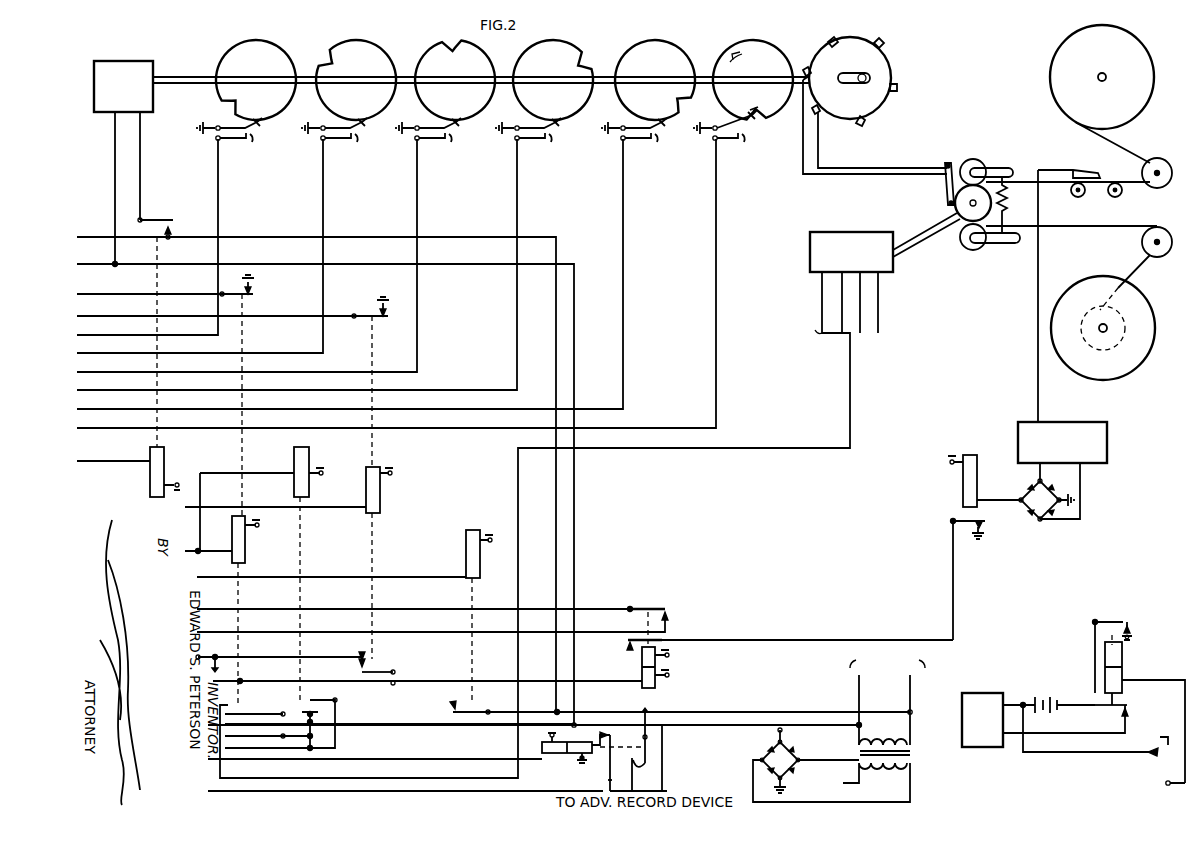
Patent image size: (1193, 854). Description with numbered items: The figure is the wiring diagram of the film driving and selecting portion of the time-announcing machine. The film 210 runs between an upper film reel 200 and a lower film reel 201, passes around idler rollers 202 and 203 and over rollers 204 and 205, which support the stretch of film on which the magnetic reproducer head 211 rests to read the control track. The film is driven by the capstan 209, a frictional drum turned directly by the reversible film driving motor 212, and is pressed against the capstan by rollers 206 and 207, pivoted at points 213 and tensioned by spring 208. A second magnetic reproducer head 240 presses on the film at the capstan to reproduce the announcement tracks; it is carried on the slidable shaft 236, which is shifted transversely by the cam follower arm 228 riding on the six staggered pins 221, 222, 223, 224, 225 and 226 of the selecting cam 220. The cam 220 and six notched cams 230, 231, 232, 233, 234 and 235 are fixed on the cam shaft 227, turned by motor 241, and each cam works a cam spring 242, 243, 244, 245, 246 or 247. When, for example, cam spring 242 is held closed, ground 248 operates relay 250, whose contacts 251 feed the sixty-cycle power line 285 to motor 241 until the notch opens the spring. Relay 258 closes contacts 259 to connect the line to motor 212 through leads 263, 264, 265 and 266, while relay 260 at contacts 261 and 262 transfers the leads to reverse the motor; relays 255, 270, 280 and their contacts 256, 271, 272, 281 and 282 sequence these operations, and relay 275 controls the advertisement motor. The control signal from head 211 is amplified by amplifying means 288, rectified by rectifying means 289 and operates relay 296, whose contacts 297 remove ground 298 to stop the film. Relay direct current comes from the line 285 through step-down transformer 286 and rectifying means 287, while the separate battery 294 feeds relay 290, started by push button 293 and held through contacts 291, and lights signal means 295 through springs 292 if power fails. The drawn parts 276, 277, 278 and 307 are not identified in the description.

The film reel 200 is at (1063, 64).
The film reel 201 is at (1087, 290).
The idler roller 202 is at (1164, 184).
The idler roller 203 is at (1140, 257).
The roller 204 is at (1116, 199).
The roller 205 is at (1080, 197).
The roller 206 is at (973, 164).
The roller 207 is at (970, 250).
The spring 208 is at (1023, 205).
The capstan 209 is at (952, 206).
The film 210 is at (1160, 157).
The magnetic reproducer head 211 is at (1092, 164).
The film driving motor 212 is at (885, 242).
The pivot points 213 is at (1007, 165).
The cam 220 is at (850, 78).
The pin 221 is at (800, 58).
The pin 222 is at (840, 30).
The pin 223 is at (885, 47).
The pin 224 is at (899, 90).
The pin 225 is at (868, 119).
The pin 226 is at (822, 116).
The cam shaft 227 is at (199, 75).
The cam follower arm 228 is at (801, 152).
The cam 230 is at (753, 80).
The cam 231 is at (655, 80).
The cam 232 is at (553, 80).
The cam 233 is at (455, 81).
The cam 234 is at (356, 80).
The cam 235 is at (256, 80).
The shaft 236 is at (886, 166).
The magnetic reproducer head 240 is at (945, 195).
The motor 241 is at (123, 86).
The cam spring 242 is at (244, 140).
The cam spring 243 is at (334, 140).
The cam spring 244 is at (430, 140).
The cam spring 245 is at (531, 140).
The cam spring 246 is at (639, 140).
The cam spring 247 is at (728, 136).
The ground 248 is at (195, 121).
The relay 250 is at (166, 458).
The contacts 251 is at (173, 224).
The relay 255 is at (245, 548).
The contacts 256 is at (254, 296).
The relay 258 is at (488, 522).
The contacts 259 is at (450, 704).
The relay 260 is at (308, 460).
The contacts 261 is at (318, 712).
The contacts 262 is at (323, 736).
The lead 263 is at (888, 302).
The lead 264 is at (870, 302).
The lead 265 is at (852, 302).
The lead 266 is at (535, 525).
The relay 270 is at (380, 490).
The contacts 271 is at (392, 320).
The contacts 272 is at (370, 667).
The relay 275 is at (553, 753).
The relay contact 276 is at (598, 732).
The relay contact 277 is at (648, 769).
The relay contact 278 is at (608, 771).
The relay 280 is at (658, 682).
The contacts 281 is at (628, 648).
The contacts 282 is at (670, 610).
The 60 cycle power line 285 is at (911, 695).
The step-down transformer 286 is at (910, 767).
The rectifying means 287 is at (767, 752).
The amplifying means 288 is at (1062, 442).
The rectifying means 289 is at (1041, 522).
The relay 290 is at (1122, 664).
The contacts 291 is at (1130, 624).
The springs 292 is at (1129, 706).
The non-locking push button 293 is at (1162, 757).
The battery 294 is at (1072, 698).
The signal means 295 is at (976, 710).
The relay 296 is at (963, 483).
The contacts 297 is at (980, 522).
The ground 298 is at (989, 544).
The cam follower 307 is at (770, 122).